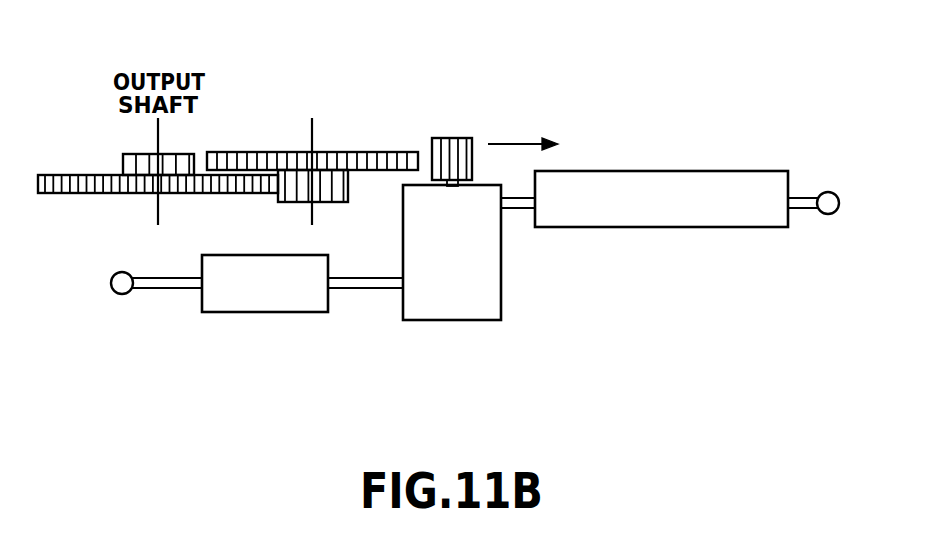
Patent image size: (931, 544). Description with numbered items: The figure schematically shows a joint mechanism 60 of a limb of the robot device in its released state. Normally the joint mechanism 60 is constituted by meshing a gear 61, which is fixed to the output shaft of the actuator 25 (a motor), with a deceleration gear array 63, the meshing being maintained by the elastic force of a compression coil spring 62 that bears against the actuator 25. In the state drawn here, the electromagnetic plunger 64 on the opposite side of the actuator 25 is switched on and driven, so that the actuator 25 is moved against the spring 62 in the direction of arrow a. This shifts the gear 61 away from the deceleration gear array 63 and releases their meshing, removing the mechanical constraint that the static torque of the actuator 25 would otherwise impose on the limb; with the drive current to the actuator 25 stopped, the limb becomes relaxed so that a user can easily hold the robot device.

The deceleration gear array 63 is at (331, 138).
The gear 61 is at (445, 137).
The direction of arrow a is at (514, 143).
The actuator 25 is at (501, 287).
The electromagnetic plunger 64 is at (690, 171).
The compression coil spring 62 is at (267, 312).
The joint mechanism 60 is at (568, 329).